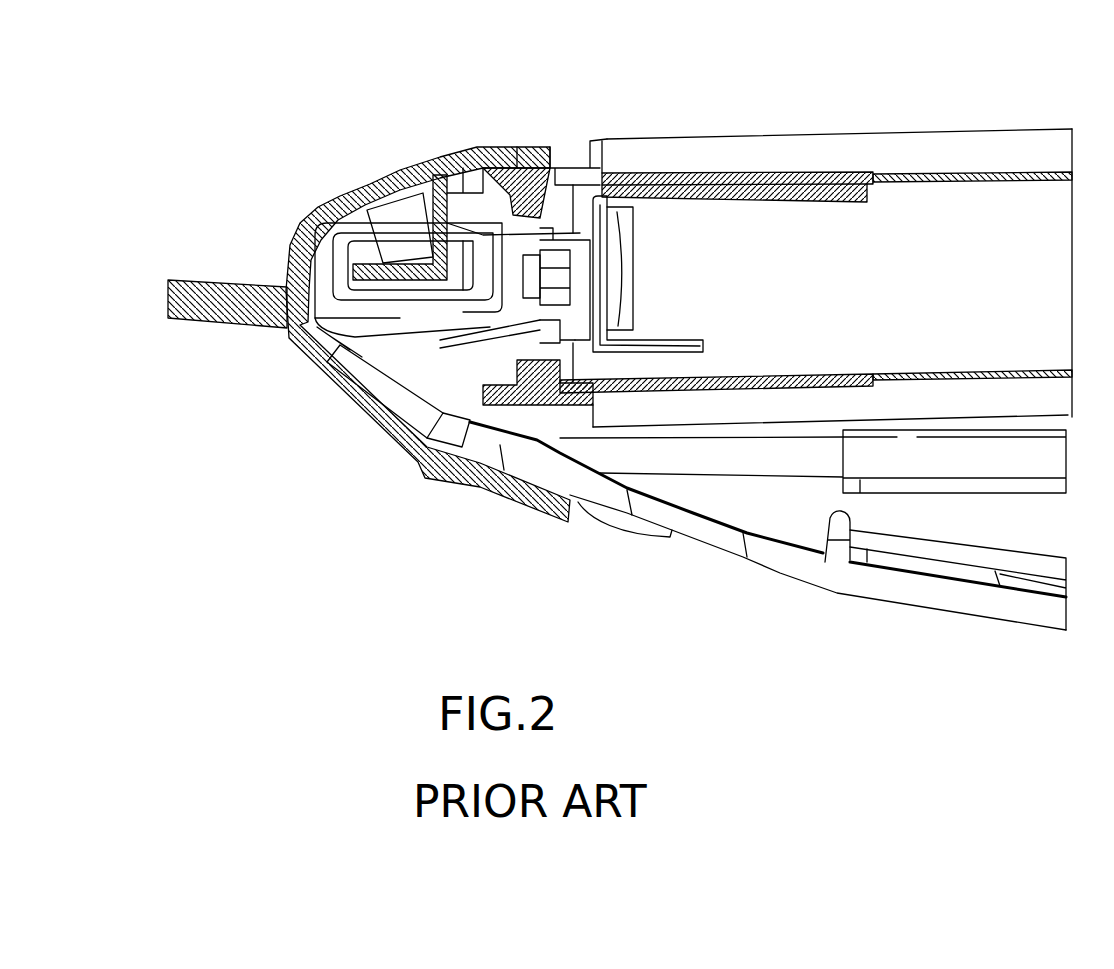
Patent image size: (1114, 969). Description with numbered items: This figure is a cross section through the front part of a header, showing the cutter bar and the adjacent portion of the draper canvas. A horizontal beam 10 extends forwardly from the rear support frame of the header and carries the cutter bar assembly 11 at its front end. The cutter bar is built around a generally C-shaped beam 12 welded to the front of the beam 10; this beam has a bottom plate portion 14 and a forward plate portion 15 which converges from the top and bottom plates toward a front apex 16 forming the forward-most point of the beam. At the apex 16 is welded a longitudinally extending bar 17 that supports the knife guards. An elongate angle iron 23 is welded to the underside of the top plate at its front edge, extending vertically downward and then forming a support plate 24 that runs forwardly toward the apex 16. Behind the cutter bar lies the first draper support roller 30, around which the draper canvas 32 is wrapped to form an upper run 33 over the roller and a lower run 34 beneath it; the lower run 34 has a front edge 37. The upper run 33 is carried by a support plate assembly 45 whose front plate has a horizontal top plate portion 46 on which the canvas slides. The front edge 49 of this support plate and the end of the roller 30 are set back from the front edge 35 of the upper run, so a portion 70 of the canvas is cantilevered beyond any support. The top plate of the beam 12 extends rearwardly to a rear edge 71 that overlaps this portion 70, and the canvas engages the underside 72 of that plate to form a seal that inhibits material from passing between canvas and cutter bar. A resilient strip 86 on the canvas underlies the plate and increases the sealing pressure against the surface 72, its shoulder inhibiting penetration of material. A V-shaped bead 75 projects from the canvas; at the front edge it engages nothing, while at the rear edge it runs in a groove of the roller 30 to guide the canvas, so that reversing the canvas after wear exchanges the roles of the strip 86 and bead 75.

The beam 10 is at (843, 583).
The cutter bar assembly 11 is at (320, 408).
The C-shaped beam 12 is at (487, 388).
The bottom plate portion 14 is at (531, 522).
The forward plate portion 15 is at (286, 263).
The front apex 16 is at (283, 287).
The longitudinally extending bar 17 is at (190, 322).
The angle iron 23 is at (371, 266).
The support plate 24 is at (322, 350).
The first draper support roller 30 is at (847, 296).
The draper canvas 32 is at (966, 165).
The upper run 33 is at (923, 175).
The lower run 34 is at (907, 373).
The front edge of the upper run 35 is at (464, 150).
The front edge of the lower run 37 is at (420, 463).
The support plate assembly 45 is at (783, 174).
The horizontal top plate portion 46 is at (684, 184).
The front edge of the support plate 49 is at (610, 176).
The cantilevered portion 70 is at (517, 148).
The rear edge of the top plate portion 71 is at (560, 168).
The underside of the top plate portion 72 is at (502, 148).
The bead 75 is at (627, 227).
The strip 86 is at (598, 168).